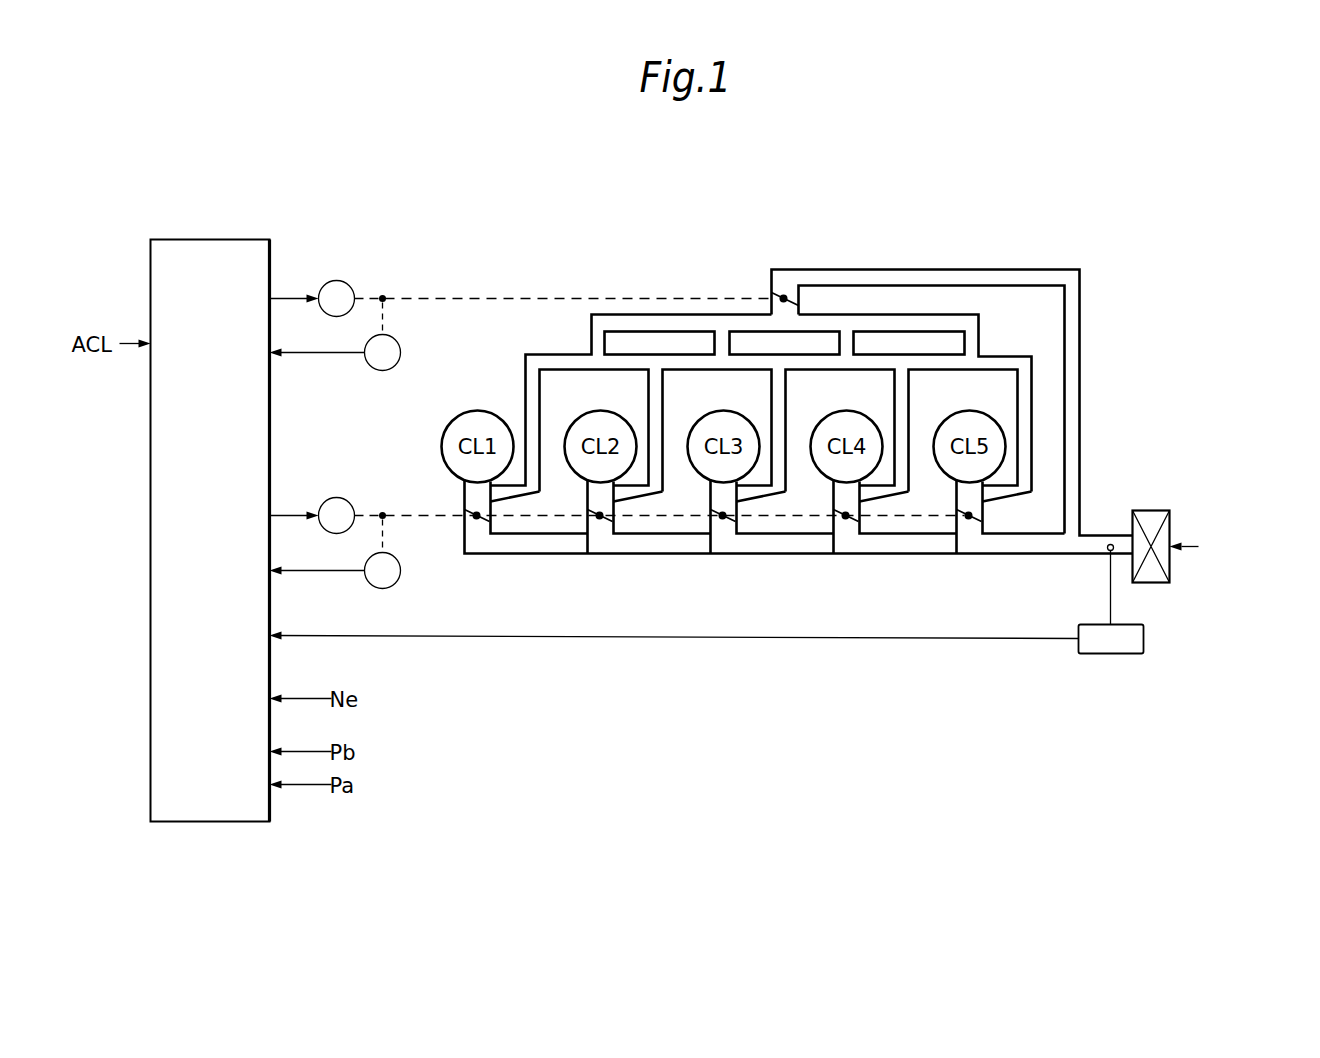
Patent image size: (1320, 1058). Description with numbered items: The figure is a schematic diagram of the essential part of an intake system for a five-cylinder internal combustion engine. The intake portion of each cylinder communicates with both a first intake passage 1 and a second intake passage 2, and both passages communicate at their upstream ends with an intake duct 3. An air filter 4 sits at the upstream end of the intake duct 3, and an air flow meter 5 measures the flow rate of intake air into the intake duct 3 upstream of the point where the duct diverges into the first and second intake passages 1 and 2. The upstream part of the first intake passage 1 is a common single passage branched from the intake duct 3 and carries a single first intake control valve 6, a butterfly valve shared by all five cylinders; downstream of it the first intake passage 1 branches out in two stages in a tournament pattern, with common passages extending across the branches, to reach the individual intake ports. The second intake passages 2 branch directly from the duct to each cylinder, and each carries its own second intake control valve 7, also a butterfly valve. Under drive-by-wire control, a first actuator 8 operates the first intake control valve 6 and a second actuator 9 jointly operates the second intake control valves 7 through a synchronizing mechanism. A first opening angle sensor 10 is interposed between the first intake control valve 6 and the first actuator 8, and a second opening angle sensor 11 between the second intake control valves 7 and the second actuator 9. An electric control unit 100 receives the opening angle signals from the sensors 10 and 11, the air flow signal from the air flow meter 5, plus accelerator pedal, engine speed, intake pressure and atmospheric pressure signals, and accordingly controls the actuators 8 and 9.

The electric control unit (ECU) 100 is at (209, 238).
The first intake passage 1 is at (524, 392).
The second intake passage 2 is at (469, 527).
The intake duct 3 is at (1101, 534).
The air filter 4 is at (1149, 509).
The air flow meter 5 is at (1120, 654).
The first intake control valve 6 is at (781, 291).
The second intake control valve 7 is at (477, 522).
The first actuator 8 is at (346, 279).
The second actuator 9 is at (345, 497).
The first opening angle sensor 10 is at (398, 342).
The second opening angle sensor 11 is at (393, 586).